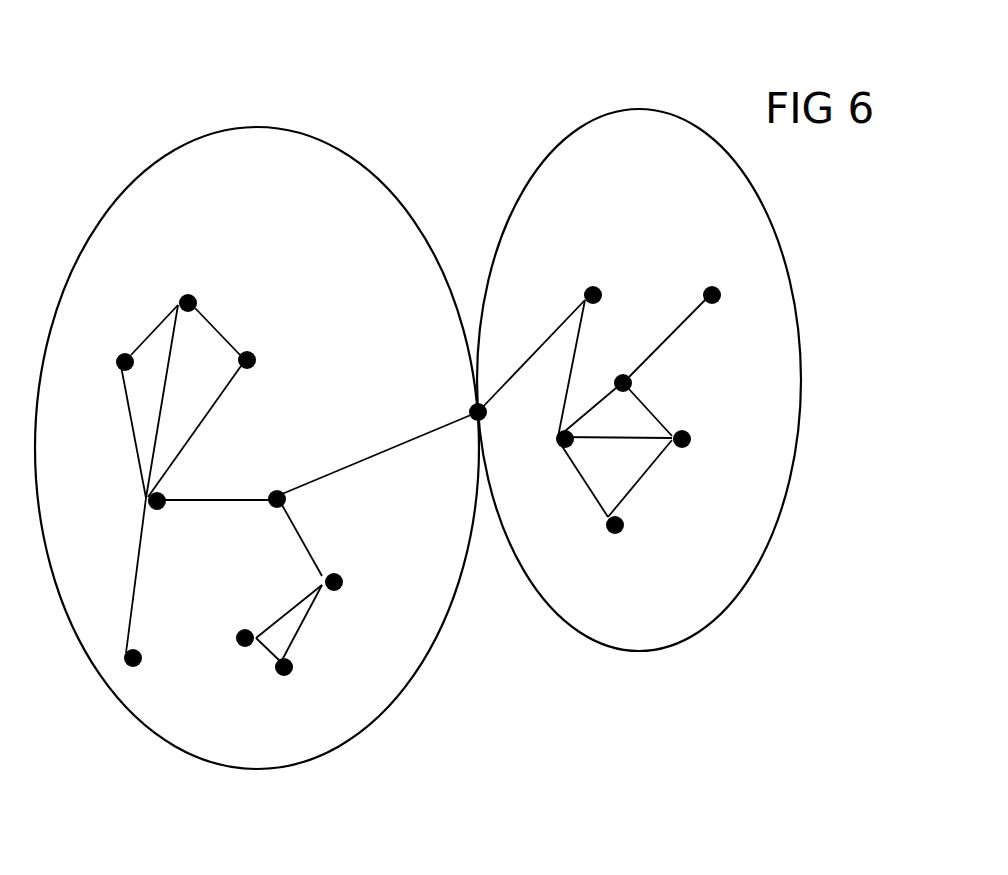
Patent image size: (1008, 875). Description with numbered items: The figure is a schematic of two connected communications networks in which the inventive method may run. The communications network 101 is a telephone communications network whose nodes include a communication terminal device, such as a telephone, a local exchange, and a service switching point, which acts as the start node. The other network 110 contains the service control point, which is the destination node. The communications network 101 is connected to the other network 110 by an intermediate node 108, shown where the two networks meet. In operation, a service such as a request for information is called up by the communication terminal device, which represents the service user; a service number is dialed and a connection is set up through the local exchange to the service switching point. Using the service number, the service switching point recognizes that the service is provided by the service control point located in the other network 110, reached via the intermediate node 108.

The communications network 101 is at (198, 143).
The other network 110 is at (665, 108).
The intermediate node 108 is at (433, 397).